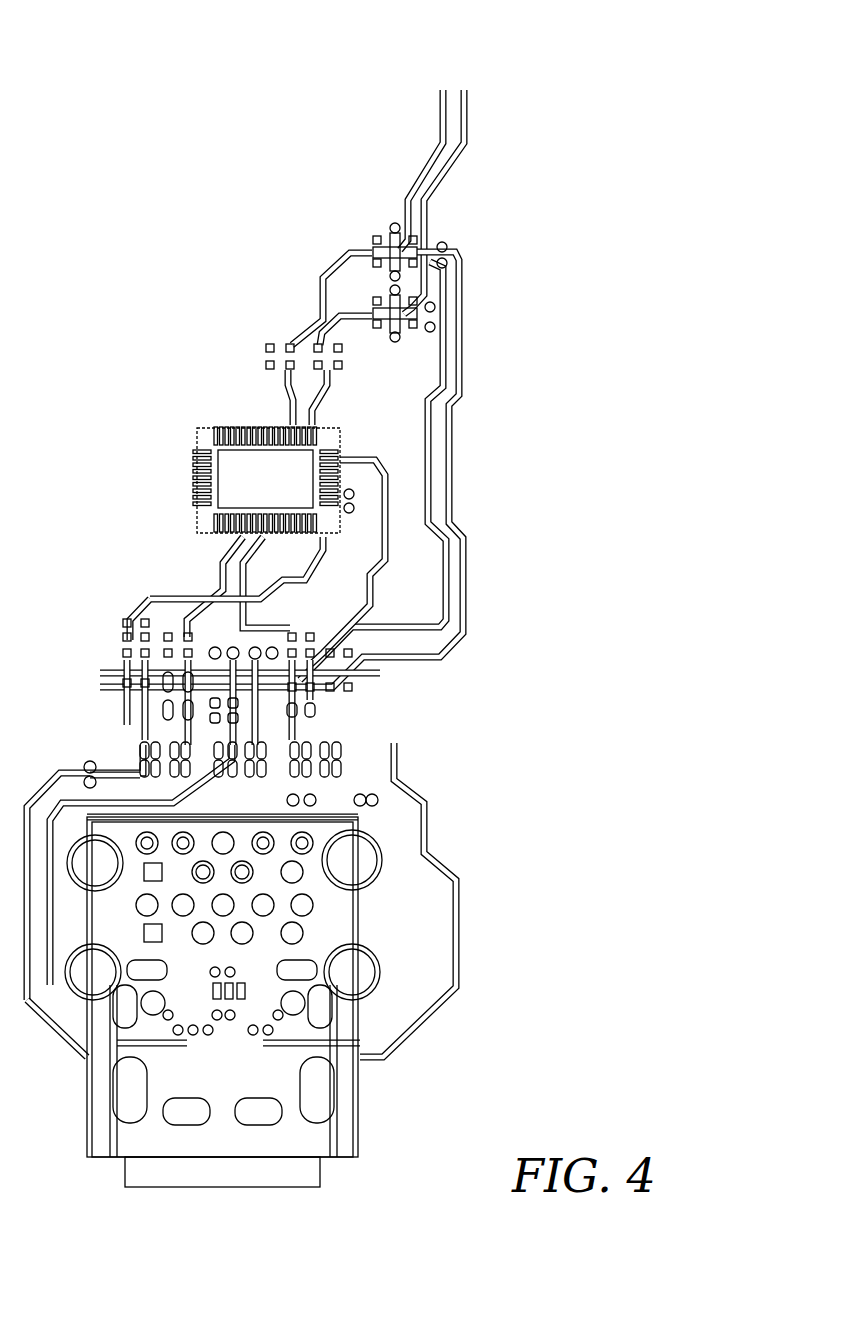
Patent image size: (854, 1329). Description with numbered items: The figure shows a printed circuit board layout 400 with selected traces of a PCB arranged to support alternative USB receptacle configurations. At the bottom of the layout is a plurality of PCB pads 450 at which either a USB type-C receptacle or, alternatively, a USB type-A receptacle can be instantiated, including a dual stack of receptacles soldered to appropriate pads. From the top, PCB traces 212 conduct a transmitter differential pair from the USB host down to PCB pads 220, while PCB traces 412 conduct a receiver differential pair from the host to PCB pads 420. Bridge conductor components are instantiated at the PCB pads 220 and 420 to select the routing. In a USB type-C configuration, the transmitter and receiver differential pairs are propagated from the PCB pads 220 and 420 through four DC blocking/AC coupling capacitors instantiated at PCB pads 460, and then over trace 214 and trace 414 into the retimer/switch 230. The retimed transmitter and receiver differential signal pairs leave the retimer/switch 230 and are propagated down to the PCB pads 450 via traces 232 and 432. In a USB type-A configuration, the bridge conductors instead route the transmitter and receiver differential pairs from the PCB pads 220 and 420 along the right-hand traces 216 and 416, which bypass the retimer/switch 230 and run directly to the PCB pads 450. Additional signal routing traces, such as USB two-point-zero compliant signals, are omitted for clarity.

The printed circuit board layout 400 is at (622, 115).
The PCB traces 212 is at (374, 167).
The PCB traces 412 is at (477, 202).
The PCB pads 220 is at (338, 260).
The PCB pads 420 is at (303, 288).
The PCB pads 460 is at (257, 326).
The trace 214 is at (222, 381).
The trace 414 is at (365, 397).
The retimer/switch 230 is at (191, 458).
The traces 216 is at (431, 469).
The traces 416 is at (441, 471).
The traces 232 is at (197, 575).
The traces 432 is at (449, 562).
The PCB pads 450 is at (333, 903).